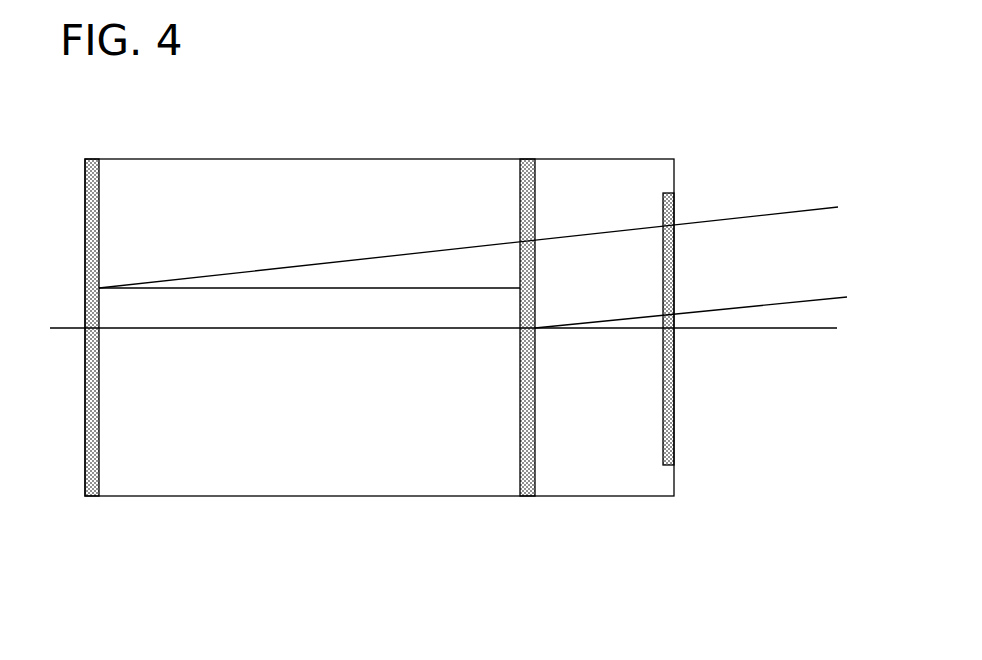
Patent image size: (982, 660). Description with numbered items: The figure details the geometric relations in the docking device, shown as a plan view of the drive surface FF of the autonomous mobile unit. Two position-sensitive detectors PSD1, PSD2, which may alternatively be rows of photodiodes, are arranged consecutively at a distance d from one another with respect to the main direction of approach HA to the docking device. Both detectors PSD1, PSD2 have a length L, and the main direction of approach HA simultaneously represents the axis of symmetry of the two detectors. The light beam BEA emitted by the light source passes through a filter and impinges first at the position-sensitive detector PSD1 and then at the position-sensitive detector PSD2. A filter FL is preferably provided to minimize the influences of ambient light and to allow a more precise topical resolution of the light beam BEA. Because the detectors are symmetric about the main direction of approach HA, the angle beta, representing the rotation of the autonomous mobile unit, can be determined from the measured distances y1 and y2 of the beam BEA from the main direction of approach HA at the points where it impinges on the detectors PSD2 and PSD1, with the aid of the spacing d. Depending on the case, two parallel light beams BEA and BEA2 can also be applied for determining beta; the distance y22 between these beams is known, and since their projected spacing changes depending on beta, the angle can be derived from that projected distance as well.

The position-sensitive detector PSD1 is at (98, 312).
The position-sensitive detector PSD2 is at (532, 312).
The drive surface FF is at (590, 472).
The filter FL is at (667, 470).
The main direction of approach HA is at (787, 330).
The light beam BEA is at (735, 217).
The second light beam BEA2 is at (847, 300).
The measured distance y2 is at (112, 289).
The angle beta is at (431, 254).
The measured distance y1 is at (546, 241).
The distance between beams y22 is at (767, 218).
The distance d is at (532, 556).
The length L is at (50, 158).